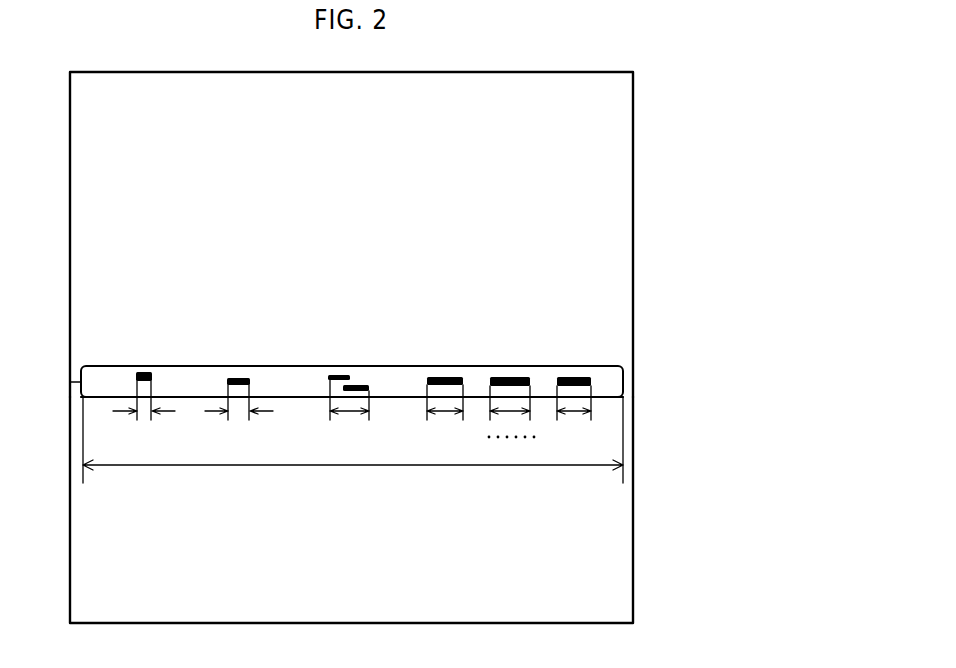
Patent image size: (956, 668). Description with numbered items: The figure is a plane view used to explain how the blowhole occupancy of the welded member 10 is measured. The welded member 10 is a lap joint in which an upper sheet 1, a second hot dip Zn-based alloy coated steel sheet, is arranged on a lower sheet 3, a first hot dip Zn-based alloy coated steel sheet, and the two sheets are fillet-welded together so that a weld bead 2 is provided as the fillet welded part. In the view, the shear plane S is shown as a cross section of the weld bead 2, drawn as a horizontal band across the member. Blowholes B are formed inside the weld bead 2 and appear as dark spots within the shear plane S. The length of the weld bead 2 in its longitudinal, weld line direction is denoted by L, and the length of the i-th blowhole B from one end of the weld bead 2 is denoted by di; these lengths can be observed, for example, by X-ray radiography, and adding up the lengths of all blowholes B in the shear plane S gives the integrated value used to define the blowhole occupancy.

The welded member 10 is at (679, 116).
The upper sheet 1 is at (623, 240).
The weld bead 2 is at (615, 389).
The lower sheet 3 is at (623, 535).
The shear plane S is at (616, 375).
The blowhole B is at (447, 376).